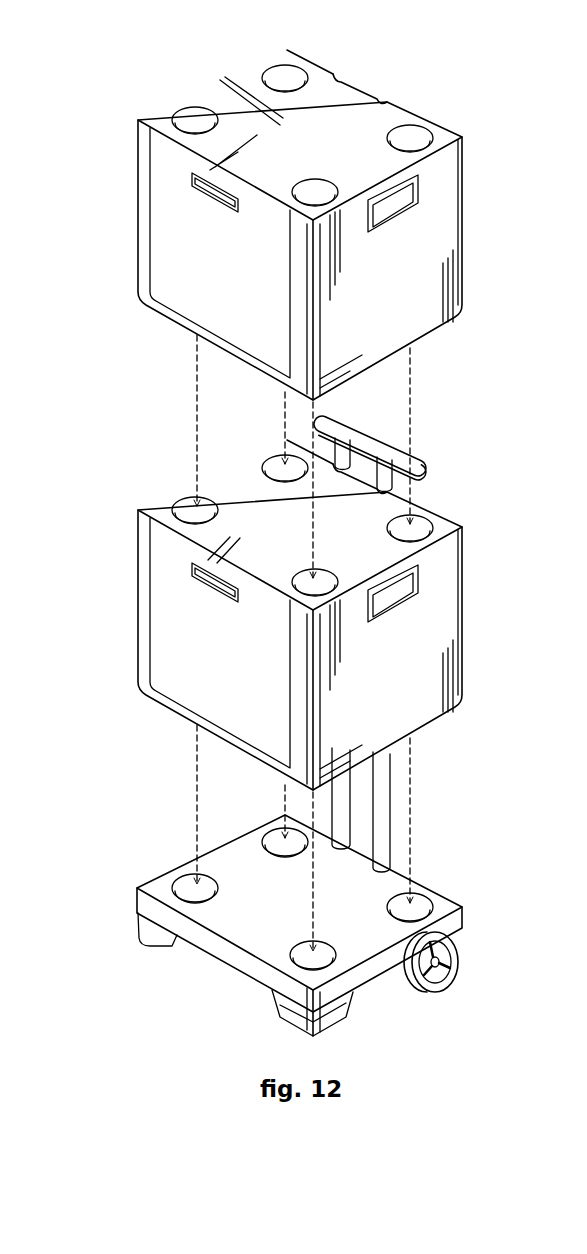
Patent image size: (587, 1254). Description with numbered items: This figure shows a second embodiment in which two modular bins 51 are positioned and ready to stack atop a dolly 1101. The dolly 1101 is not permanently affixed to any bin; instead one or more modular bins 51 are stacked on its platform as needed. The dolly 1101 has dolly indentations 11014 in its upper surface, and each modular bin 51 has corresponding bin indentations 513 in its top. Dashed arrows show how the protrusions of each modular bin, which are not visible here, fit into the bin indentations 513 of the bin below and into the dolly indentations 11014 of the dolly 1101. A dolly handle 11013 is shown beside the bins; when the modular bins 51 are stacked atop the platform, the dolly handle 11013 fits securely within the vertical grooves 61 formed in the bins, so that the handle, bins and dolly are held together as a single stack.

The modular bin 51 is at (125, 262).
The vertical groove 61 is at (383, 100).
The bin indentation 513 is at (390, 528).
The dolly handle 11013 is at (428, 468).
The dolly 1101 is at (148, 860).
The dolly indentation 11014 is at (387, 900).